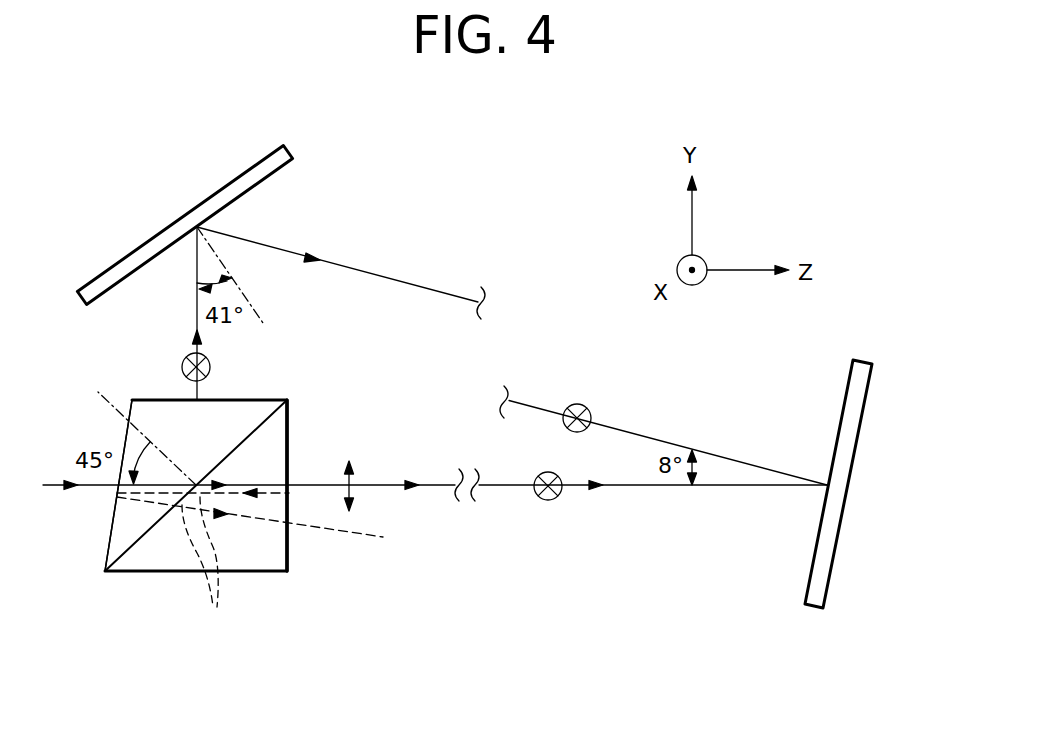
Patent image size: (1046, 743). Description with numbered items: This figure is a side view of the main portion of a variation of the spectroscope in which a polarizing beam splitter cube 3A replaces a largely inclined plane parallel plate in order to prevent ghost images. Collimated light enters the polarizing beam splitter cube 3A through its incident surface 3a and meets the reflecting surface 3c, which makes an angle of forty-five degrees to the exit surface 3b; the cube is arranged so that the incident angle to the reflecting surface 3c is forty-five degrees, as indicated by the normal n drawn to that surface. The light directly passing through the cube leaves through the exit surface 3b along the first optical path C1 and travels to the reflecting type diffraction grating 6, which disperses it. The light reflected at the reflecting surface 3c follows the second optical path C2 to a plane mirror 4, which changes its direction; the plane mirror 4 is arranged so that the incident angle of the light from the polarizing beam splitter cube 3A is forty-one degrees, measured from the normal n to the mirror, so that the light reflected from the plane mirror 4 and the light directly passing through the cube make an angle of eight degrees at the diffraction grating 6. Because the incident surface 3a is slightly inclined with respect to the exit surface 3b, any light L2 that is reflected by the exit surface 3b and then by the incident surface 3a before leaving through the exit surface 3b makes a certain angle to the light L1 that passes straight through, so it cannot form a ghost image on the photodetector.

The plane mirror 4 is at (212, 193).
The reflecting type diffraction grating 6 is at (853, 360).
The polarizing beam splitter cube 3A is at (155, 571).
The incident surface 3a is at (110, 550).
The exit surface 3b is at (288, 556).
The reflecting surface 3c is at (148, 512).
The light L1 is at (303, 485).
The light L2 is at (250, 561).
The first optical path C1 is at (447, 487).
The second optical path C2 is at (197, 307).
The normal line n is at (113, 402).